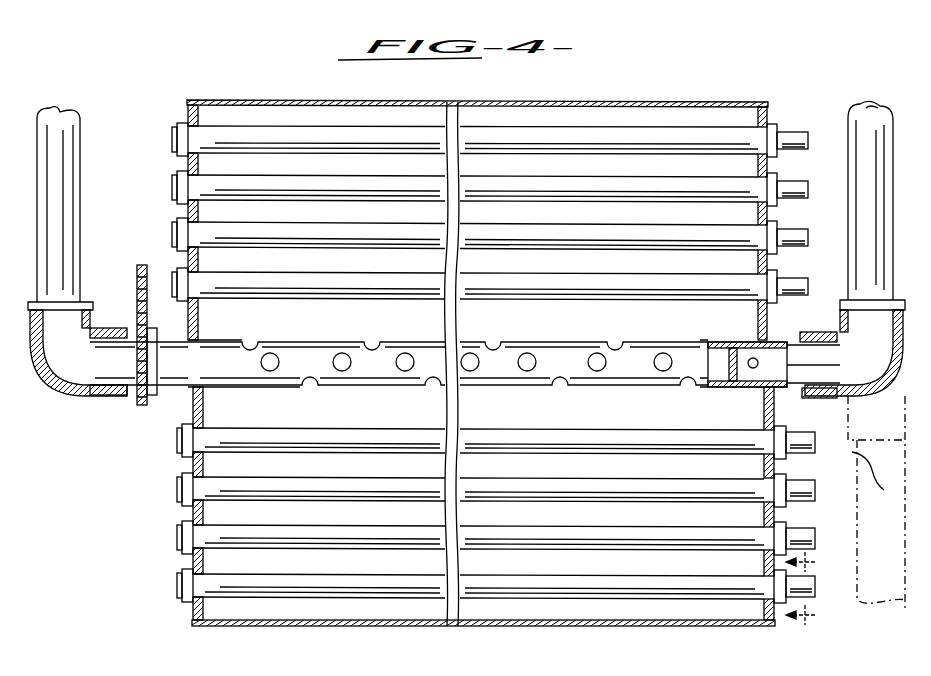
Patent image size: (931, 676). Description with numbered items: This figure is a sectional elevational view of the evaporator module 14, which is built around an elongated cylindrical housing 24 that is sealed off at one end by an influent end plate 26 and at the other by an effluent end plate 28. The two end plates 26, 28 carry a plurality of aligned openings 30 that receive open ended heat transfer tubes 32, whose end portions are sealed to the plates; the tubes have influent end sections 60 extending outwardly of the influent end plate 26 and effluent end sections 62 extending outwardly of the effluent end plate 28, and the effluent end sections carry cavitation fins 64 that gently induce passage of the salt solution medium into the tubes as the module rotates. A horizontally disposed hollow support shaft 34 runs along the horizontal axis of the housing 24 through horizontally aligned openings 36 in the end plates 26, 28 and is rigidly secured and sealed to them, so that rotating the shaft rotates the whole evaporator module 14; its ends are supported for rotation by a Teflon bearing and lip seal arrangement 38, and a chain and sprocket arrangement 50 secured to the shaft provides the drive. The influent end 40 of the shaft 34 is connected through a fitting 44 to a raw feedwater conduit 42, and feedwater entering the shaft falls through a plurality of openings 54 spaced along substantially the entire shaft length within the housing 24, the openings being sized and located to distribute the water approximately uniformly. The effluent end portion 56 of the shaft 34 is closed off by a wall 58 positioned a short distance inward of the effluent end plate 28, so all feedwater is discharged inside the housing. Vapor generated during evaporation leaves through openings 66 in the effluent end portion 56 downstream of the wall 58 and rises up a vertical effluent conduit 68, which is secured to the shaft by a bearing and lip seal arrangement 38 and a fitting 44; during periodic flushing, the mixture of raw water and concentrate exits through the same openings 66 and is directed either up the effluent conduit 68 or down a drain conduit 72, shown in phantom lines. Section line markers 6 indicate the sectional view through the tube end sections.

The section line 6 is at (814, 588).
The evaporator module 14 is at (513, 92).
The elongated cylindrical housing 24 is at (673, 103).
The influent end plate 26 is at (192, 257).
The effluent end plate 28 is at (766, 212).
The aligned openings 30 is at (203, 126).
The heat transfer tubes 32 is at (605, 140).
The hollow support shaft 34 is at (235, 352).
The horizontally aligned openings 36 is at (205, 340).
The bearing and lip seal arrangement 38 is at (118, 396).
The influent end 40 is at (80, 368).
The raw feedwater conduit 42 is at (55, 195).
The fitting 44 is at (896, 380).
The chain and sprocket arrangement 50 is at (150, 314).
The openings 54 is at (342, 365).
The effluent end portion 56 is at (742, 360).
The wall 58 is at (730, 362).
The influent end sections 60 is at (172, 137).
The effluent end sections 62 is at (778, 128).
The cavitation fins 64 is at (803, 445).
The openings 66 is at (758, 387).
The vertical effluent conduit 68 is at (862, 192).
The drain conduit 72 is at (855, 465).